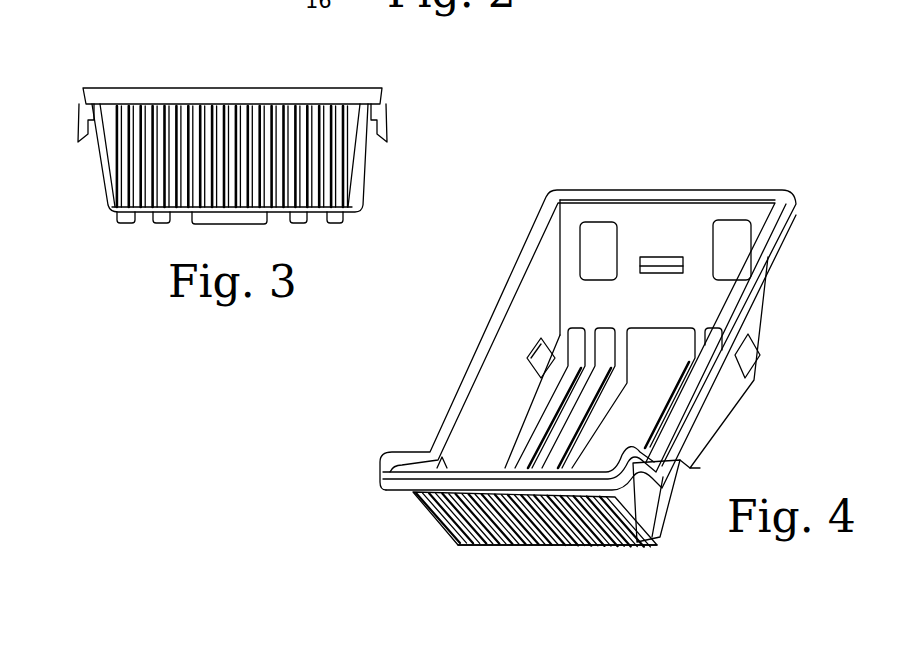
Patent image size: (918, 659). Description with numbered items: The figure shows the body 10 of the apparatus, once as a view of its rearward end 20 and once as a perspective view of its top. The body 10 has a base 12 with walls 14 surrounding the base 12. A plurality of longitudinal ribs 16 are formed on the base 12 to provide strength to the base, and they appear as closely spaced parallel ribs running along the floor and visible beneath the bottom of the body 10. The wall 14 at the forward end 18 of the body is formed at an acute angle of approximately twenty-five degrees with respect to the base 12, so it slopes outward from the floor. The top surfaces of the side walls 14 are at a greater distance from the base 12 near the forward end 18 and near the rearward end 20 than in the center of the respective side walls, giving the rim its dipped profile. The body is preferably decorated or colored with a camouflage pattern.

In FIG. 3, the body 10 is at (113, 54).
In FIG. 4, the body 10 is at (788, 133).
In FIG. 3, the base 12 is at (313, 221).
In FIG. 4, the base 12 is at (748, 390).
In FIG. 3, the walls 14 is at (108, 179).
In FIG. 4, the walls 14 is at (485, 407).
In FIG. 3, the longitudinal ribs 16 is at (127, 226).
In FIG. 4, the longitudinal ribs 16 is at (560, 330).
In FIG. 4, the forward end 18 is at (670, 190).
In FIG. 4, the rearward end 20 is at (552, 545).